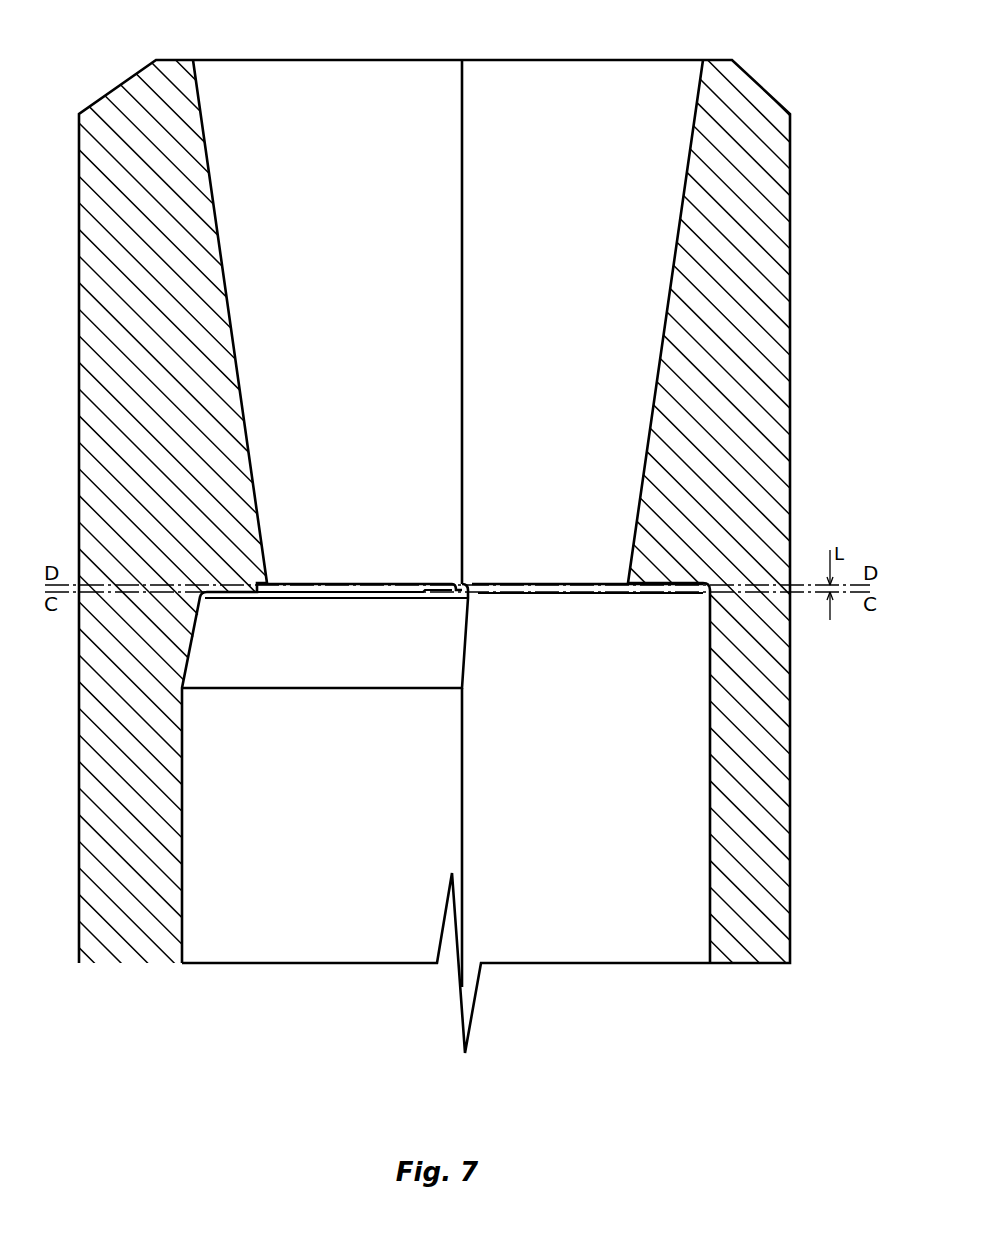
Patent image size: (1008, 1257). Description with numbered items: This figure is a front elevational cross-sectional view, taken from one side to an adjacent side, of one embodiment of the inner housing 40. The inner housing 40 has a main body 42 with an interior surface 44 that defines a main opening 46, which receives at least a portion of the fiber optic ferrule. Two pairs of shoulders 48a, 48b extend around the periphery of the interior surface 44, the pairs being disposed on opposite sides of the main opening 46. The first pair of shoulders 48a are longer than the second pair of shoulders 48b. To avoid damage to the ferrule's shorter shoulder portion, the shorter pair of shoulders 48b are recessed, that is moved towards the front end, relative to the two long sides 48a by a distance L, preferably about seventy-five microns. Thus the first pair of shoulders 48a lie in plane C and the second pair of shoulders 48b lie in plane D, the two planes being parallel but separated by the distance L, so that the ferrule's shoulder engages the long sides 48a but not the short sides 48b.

The inner housing 40 is at (806, 84).
The main body 42 is at (777, 413).
The interior surface 44 is at (326, 88).
The main opening 46 is at (580, 93).
The first pair of shoulders 48a is at (310, 598).
The second pair of shoulders 48b is at (652, 585).